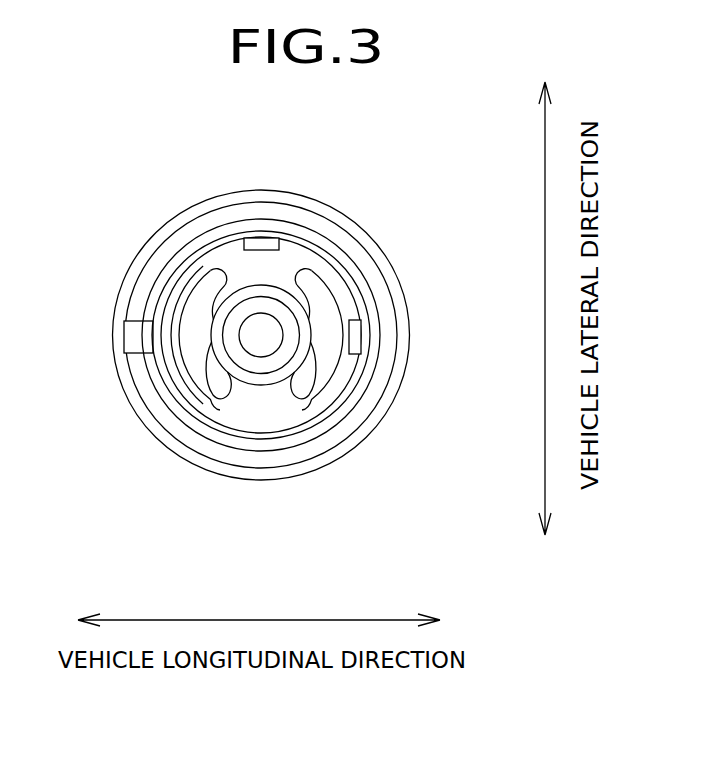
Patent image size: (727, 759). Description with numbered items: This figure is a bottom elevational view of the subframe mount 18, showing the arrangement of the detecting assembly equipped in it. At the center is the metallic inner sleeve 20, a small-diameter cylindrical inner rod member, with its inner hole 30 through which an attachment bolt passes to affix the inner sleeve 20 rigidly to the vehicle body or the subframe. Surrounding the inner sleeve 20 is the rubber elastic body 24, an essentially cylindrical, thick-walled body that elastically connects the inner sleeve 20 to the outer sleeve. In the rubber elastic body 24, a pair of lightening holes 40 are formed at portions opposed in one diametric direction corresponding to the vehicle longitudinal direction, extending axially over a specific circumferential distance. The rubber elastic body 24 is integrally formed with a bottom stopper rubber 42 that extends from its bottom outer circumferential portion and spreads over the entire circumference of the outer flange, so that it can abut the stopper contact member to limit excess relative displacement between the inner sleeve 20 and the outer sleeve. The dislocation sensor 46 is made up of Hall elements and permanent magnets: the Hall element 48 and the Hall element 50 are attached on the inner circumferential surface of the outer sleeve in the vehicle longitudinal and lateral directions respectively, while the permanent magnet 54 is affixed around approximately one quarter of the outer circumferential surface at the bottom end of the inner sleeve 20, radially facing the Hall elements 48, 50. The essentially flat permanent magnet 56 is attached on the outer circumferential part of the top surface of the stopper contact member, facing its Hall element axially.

The subframe mount 18 is at (434, 263).
The inner sleeve 20 is at (268, 364).
The rubber elastic body 24 is at (220, 410).
The inner hole 30 is at (243, 331).
The lightening holes 40 is at (231, 388).
The bottom stopper rubber 42 is at (348, 387).
The dislocation sensor 46 is at (417, 170).
The Hall element 48 is at (355, 333).
The Hall element 50 is at (270, 245).
The permanent magnet 54 is at (273, 293).
The permanent magnet 56 is at (133, 341).